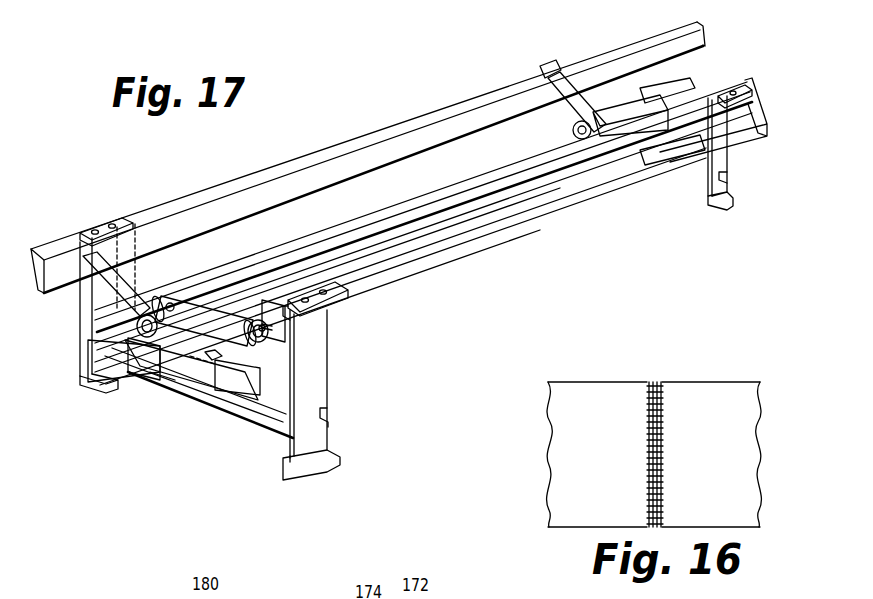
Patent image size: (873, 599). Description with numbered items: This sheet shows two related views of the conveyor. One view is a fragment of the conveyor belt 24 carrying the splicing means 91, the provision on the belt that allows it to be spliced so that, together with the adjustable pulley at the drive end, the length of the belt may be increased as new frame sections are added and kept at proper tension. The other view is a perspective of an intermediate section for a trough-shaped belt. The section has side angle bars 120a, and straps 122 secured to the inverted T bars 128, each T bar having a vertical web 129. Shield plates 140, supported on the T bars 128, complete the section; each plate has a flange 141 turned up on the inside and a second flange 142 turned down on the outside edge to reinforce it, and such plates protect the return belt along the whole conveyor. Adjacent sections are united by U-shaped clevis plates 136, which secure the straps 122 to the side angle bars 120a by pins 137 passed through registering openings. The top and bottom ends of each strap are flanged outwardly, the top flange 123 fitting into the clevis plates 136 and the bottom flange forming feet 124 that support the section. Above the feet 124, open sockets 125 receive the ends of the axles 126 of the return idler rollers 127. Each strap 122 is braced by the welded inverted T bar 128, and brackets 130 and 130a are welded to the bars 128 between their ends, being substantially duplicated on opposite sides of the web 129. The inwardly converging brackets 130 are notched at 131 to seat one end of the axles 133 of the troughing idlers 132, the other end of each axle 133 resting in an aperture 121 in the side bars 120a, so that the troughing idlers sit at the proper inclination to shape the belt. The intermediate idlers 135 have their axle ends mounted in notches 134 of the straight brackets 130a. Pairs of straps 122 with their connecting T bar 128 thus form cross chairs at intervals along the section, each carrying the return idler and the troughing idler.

In FIG. 17, the side angle bars 120a is at (596, 270).
In FIG. 17, the aperture 121 is at (82, 262).
In FIG. 17, the straps 122 is at (300, 382).
In FIG. 17, the outwardly flanged top end 123 is at (295, 314).
In FIG. 17, the feet 124 is at (330, 458).
In FIG. 17, the open sockets 125 is at (330, 412).
In FIG. 17, the axles 126 is at (290, 463).
In FIG. 17, the return idler rollers 127 is at (200, 372).
In FIG. 17, the inverted T bar 128 is at (100, 337).
In FIG. 17, the vertical web 129 is at (168, 375).
In FIG. 17, the brackets 130 is at (85, 369).
In FIG. 17, the brackets 130a is at (168, 305).
In FIG. 17, the notch 131 is at (203, 369).
In FIG. 17, the troughing idlers 132 is at (107, 293).
In FIG. 17, the axles 133 is at (130, 375).
In FIG. 17, the notches 134 is at (243, 374).
In FIG. 17, the intermediate idlers 135 is at (201, 316).
In FIG. 17, the U-shaped clevis plates 136 is at (104, 225).
In FIG. 17, the pins 137 is at (94, 229).
In FIG. 17, the shield plates 140 is at (467, 185).
In FIG. 17, the flange 141 is at (395, 225).
In FIG. 17, the second flange 142 is at (632, 217).
In FIG. 16, the belt 24 is at (563, 447).
In FIG. 16, the splicing means 91 is at (663, 402).